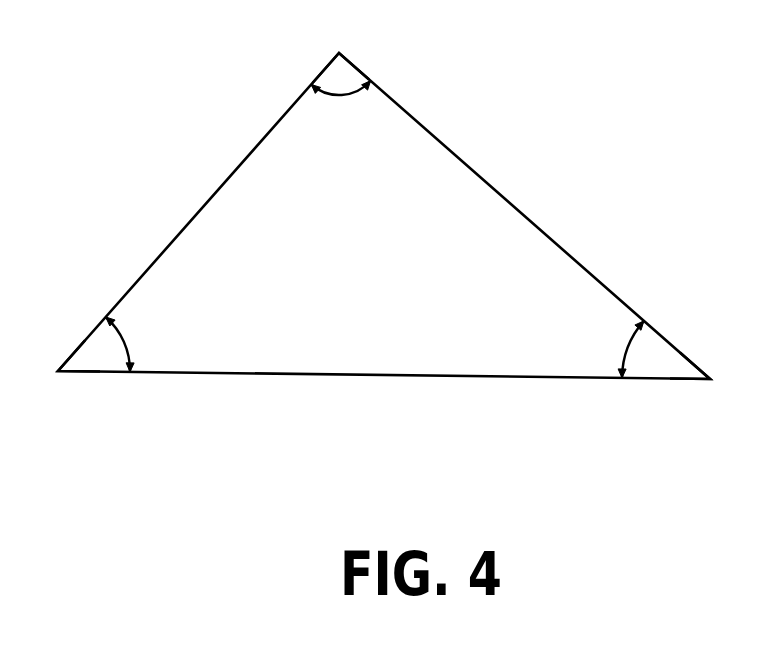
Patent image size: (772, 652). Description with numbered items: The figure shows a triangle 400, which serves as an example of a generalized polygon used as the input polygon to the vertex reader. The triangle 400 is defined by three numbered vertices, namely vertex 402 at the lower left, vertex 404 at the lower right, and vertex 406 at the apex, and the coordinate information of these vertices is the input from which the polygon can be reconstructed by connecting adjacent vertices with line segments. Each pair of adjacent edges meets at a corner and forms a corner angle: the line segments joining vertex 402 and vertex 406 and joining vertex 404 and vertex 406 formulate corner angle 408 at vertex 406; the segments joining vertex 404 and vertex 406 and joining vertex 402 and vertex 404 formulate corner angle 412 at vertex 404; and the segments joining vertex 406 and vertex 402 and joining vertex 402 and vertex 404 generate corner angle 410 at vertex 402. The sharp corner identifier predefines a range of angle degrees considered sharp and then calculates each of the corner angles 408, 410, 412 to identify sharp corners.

The triangle 400 is at (384, 216).
The vertex 402 is at (61, 375).
The vertex 404 is at (716, 387).
The vertex 406 is at (341, 48).
The corner angle 408 is at (340, 112).
The corner angle 410 is at (149, 344).
The corner angle 412 is at (603, 349).